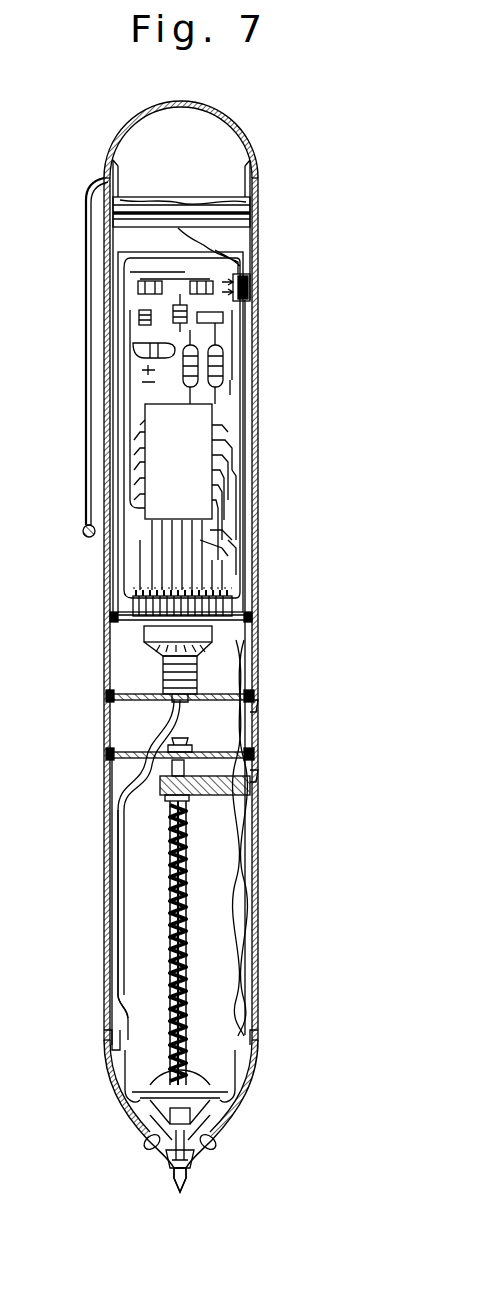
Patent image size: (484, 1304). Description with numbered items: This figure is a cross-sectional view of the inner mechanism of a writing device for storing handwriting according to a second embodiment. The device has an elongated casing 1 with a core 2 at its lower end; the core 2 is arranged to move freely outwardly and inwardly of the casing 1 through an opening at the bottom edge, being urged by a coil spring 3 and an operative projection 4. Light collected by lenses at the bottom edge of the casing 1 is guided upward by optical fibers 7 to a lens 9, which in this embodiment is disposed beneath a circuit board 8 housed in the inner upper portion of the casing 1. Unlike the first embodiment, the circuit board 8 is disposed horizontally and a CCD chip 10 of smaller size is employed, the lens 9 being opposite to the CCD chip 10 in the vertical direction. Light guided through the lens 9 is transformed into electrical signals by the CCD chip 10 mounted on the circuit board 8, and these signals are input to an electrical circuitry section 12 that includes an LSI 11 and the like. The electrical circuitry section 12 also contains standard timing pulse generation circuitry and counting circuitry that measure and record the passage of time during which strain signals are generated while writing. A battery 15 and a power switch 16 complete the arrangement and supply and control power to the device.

The casing 1 is at (105, 670).
The core 2 is at (200, 1146).
The coil spring 3 is at (180, 872).
The operative projection 4 is at (240, 780).
The optical fibers 7 is at (115, 867).
The circuit board 8 is at (228, 438).
The lens 9 is at (200, 658).
The CCD chip 10 is at (205, 628).
The LSI 11 is at (200, 410).
The electrical circuitry section 12 is at (228, 363).
The battery 15 is at (250, 215).
The power switch 16 is at (248, 283).